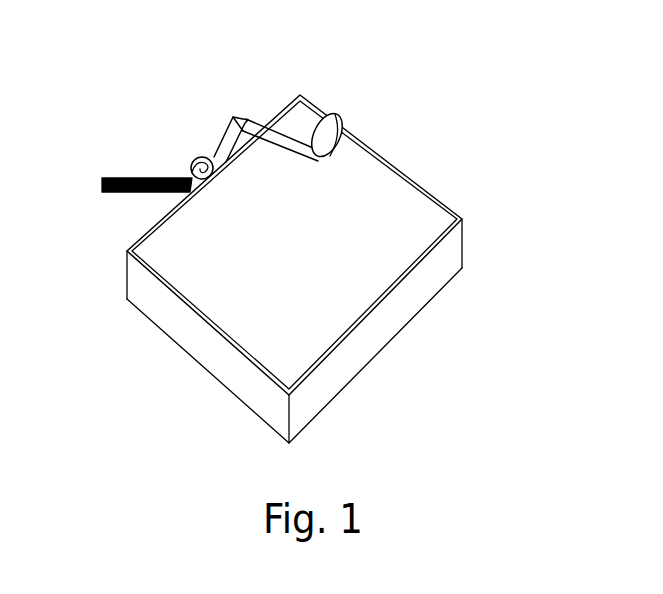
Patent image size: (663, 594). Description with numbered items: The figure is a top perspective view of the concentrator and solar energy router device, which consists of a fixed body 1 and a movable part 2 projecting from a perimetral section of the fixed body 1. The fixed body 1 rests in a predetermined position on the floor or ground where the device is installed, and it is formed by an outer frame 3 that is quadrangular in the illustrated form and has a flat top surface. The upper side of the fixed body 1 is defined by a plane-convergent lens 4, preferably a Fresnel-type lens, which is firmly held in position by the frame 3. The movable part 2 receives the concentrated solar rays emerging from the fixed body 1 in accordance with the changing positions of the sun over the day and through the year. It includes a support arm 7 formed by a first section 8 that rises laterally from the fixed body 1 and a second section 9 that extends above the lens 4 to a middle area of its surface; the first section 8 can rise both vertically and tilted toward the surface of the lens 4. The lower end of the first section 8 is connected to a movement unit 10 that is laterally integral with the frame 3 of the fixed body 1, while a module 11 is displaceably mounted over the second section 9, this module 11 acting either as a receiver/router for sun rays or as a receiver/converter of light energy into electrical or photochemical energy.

The fixed body 1 is at (436, 163).
The movable part 2 is at (199, 100).
The outer frame 3 is at (187, 307).
The plane-convergent lens 4 is at (332, 270).
The support arm 7 is at (237, 100).
The first section 8 is at (222, 136).
The second section 9 is at (290, 129).
The movement unit 10 is at (136, 184).
The module 11 is at (343, 128).